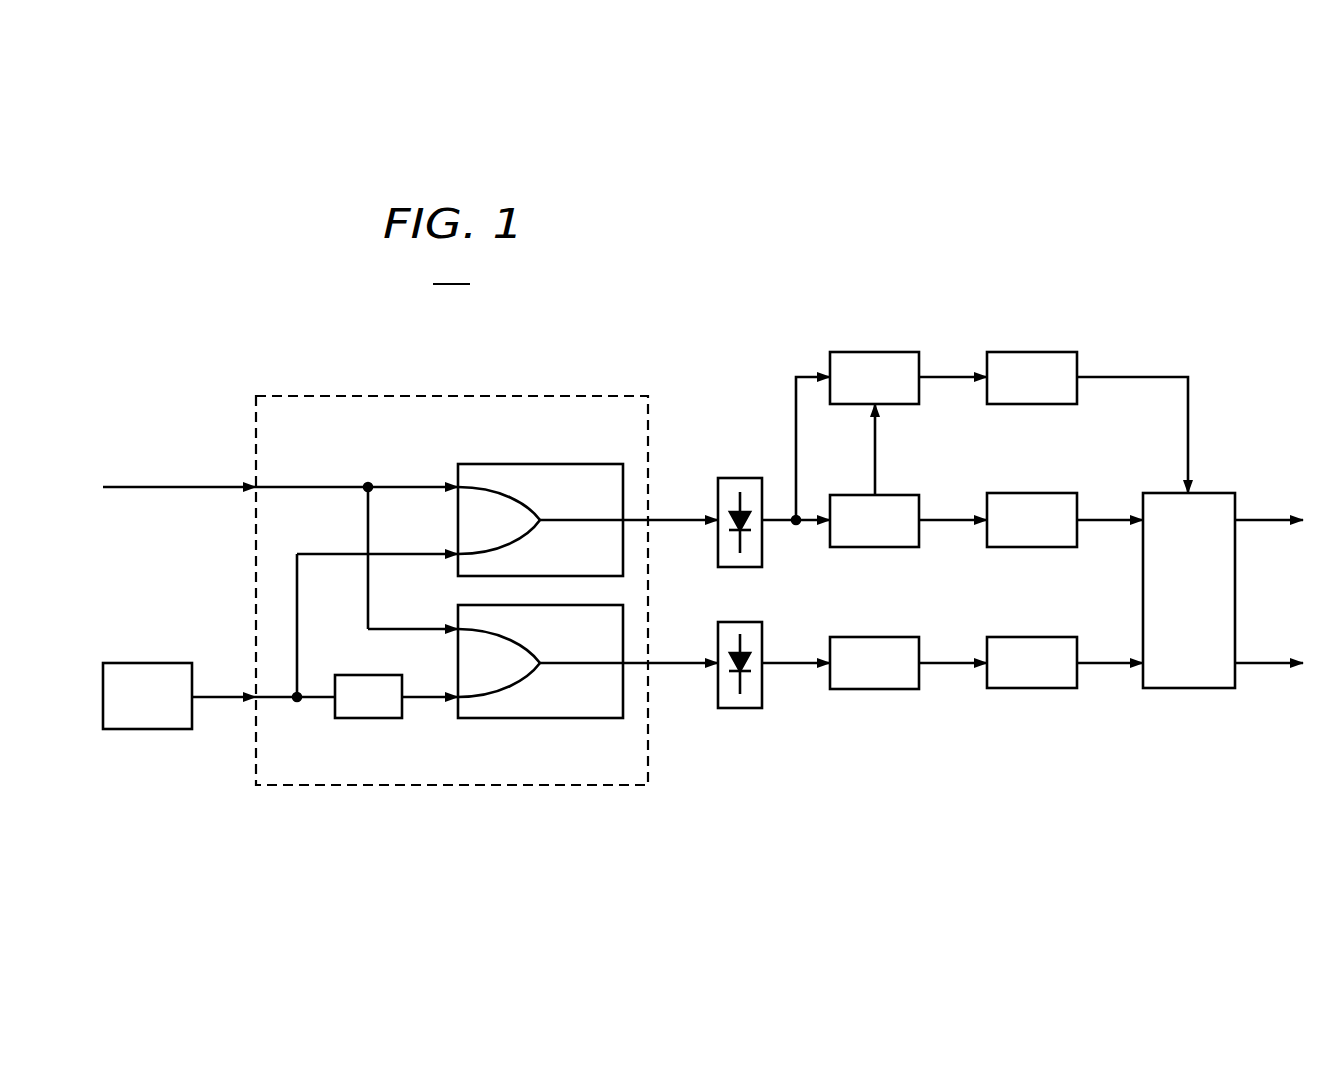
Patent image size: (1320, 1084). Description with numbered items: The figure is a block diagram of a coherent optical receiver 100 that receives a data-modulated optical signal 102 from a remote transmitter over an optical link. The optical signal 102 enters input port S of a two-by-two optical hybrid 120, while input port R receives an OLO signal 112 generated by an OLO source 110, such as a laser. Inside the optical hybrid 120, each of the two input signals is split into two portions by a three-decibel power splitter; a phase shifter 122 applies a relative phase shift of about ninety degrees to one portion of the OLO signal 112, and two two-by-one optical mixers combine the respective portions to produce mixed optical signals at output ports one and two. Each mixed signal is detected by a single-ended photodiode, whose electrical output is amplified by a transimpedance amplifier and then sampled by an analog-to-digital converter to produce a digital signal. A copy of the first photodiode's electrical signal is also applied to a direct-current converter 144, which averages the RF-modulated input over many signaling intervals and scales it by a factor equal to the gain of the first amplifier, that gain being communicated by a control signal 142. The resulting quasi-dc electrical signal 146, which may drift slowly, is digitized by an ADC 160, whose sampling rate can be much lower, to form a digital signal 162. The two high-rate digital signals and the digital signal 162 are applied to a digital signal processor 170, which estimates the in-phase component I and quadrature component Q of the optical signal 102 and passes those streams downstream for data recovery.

The coherent optical receiver 100 is at (451, 272).
The data-modulated optical signal 102 is at (172, 483).
The OLO source 110 is at (140, 663).
The OLO signal 112 is at (218, 703).
The optical hybrid 120 is at (432, 396).
The phase shifter 122 is at (377, 675).
The control signal 142 is at (873, 456).
The direct-current converter 144 is at (875, 352).
The quasi-dc electrical signal 146 is at (950, 373).
The ADC 160 is at (1030, 352).
The digital signal 162 is at (1128, 373).
The digital signal processor 170 is at (1214, 493).